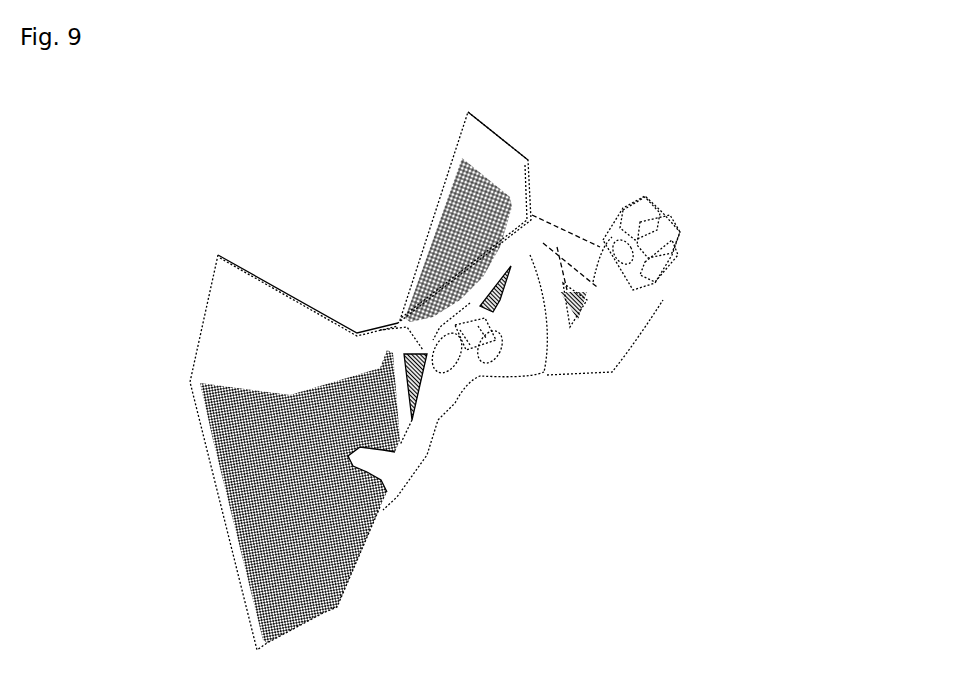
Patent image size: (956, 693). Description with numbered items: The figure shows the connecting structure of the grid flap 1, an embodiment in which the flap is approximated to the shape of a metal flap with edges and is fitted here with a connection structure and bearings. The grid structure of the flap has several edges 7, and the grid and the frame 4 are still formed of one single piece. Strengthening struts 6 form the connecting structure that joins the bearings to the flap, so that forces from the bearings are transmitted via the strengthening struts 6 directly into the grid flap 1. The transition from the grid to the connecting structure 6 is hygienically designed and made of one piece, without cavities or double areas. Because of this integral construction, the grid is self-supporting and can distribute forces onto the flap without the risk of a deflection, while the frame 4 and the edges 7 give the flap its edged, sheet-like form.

The grid flap 1 is at (630, 400).
The frame 4 is at (232, 300).
The strengthening strut 6 is at (427, 457).
The edge 7 is at (243, 603).